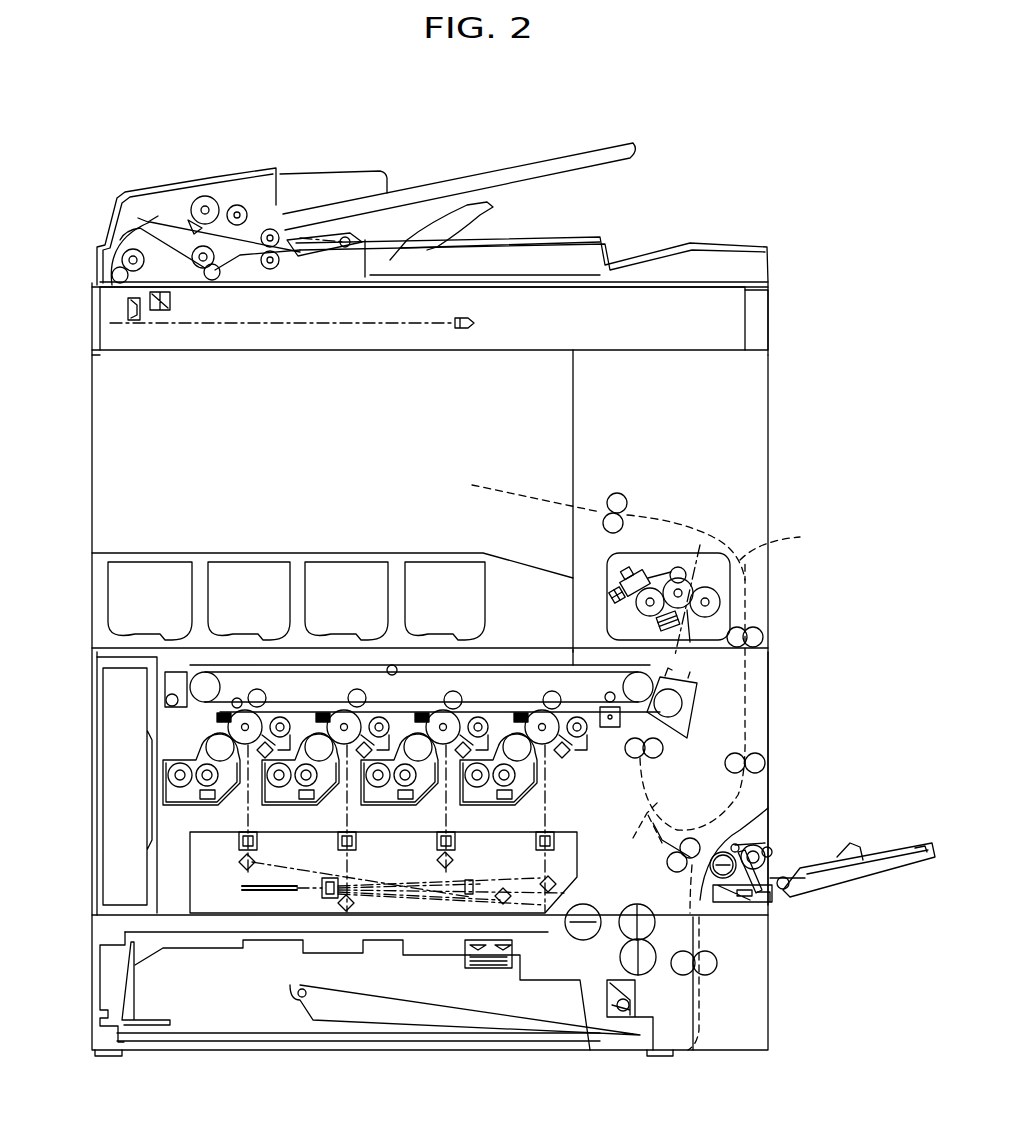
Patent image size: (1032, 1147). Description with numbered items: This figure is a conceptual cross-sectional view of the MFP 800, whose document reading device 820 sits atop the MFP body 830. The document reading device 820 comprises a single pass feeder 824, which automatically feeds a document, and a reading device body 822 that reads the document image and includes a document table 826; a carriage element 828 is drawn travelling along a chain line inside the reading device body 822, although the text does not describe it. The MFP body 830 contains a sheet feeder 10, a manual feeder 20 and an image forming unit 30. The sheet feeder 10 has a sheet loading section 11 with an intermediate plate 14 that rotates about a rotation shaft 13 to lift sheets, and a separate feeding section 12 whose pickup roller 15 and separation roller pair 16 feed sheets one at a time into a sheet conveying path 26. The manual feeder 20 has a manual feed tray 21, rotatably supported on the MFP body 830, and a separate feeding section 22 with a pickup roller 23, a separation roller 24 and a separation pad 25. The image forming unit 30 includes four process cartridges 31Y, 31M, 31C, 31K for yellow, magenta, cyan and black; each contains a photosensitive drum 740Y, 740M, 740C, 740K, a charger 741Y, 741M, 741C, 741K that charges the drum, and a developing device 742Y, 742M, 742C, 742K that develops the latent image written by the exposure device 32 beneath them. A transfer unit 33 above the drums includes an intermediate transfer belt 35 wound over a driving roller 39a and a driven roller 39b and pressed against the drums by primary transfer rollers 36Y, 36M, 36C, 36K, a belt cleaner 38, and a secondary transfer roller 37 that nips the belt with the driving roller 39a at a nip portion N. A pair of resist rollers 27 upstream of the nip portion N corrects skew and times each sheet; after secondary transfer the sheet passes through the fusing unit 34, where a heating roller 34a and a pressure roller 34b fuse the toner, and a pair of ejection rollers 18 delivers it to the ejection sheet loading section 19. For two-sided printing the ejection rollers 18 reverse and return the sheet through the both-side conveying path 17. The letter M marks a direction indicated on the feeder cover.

The sheet feeder 10 is at (788, 985).
The sheet loading section 11 is at (620, 1022).
The separate feeding section 12 is at (660, 975).
The rotation shaft 13 is at (300, 1000).
The intermediate plate 14 is at (493, 1020).
The pickup roller 15 is at (590, 905).
The separation roller pair 16 is at (640, 905).
The both-side conveying path 17 is at (649, 532).
The pair of ejection rollers 18 is at (620, 493).
The ejection sheet loading section 19 is at (287, 553).
The manual feeder 20 is at (843, 775).
The manual feed tray 21 is at (875, 848).
The separate feeding section 22 is at (765, 856).
The pickup roller 23 is at (765, 845).
The separation roller 24 is at (765, 845).
The separation pad 25 is at (717, 885).
The sheet conveying path 26 is at (654, 856).
The pair of resist rollers 27 is at (658, 762).
The image forming unit 30 is at (200, 712).
The process cartridge 31Y is at (332, 881).
The process cartridge 31M is at (347, 912).
The process cartridge 31C is at (446, 905).
The process cartridge 31K is at (545, 912).
The exposure device 32 is at (200, 863).
The transfer unit 33 is at (513, 665).
The fusing unit 34 is at (732, 573).
The heating roller 34a is at (680, 593).
The pressure roller 34b is at (705, 602).
The intermediate transfer belt 35 is at (550, 665).
The primary transfer roller 36Y is at (258, 689).
The primary transfer roller 36M is at (357, 689).
The primary transfer roller 36C is at (453, 691).
The primary transfer roller 36K is at (560, 708).
The secondary transfer roller 37 is at (680, 703).
The belt cleaner 38 is at (168, 672).
The driving roller 39a is at (655, 680).
The driven roller 39b is at (205, 672).
The photosensitive drum 740Y is at (228, 725).
The photosensitive drum 740M is at (338, 712).
The photosensitive drum 740C is at (438, 712).
The photosensitive drum 740K is at (536, 712).
The charger 741Y is at (258, 842).
The charger 741M is at (357, 842).
The charger 741C is at (456, 842).
The charger 741K is at (555, 842).
The developing device 742Y is at (265, 812).
The developing device 742M is at (364, 812).
The developing device 742C is at (463, 812).
The developing device 742K is at (529, 791).
The MFP 800 is at (765, 210).
The document reading device 820 is at (768, 323).
The reading device body 822 is at (92, 283).
The single pass feeder 824 is at (220, 175).
The document table 826 is at (520, 245).
The reading carriage 828 is at (476, 323).
The MFP body 830 is at (768, 404).
The opening direction M is at (420, 118).
The nip portion N is at (629, 658).